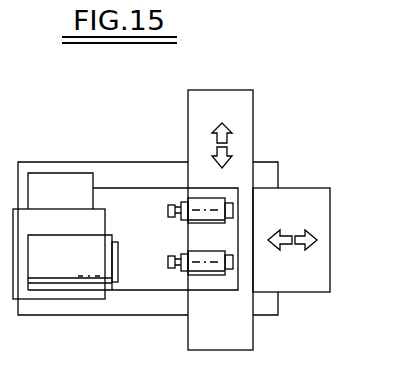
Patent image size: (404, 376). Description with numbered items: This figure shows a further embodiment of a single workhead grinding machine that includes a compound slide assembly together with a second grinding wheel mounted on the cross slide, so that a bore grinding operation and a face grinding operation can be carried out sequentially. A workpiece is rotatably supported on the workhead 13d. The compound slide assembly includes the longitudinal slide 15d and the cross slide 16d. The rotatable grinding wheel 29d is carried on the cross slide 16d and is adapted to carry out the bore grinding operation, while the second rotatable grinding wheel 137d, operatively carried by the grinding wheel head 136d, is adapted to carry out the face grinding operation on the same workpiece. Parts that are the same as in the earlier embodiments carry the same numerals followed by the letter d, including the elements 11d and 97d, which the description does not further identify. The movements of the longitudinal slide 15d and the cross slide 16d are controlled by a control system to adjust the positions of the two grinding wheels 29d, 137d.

The body / housing 11d is at (283, 168).
The workhead 13d is at (75, 276).
The longitudinal slide 15d is at (307, 294).
The cross slide 16d is at (257, 118).
The rotatable grinding wheel 29d is at (168, 208).
The upper clamp 97d is at (217, 210).
The grinding wheel head 136d is at (207, 269).
The rotatable grinding wheel 137d is at (168, 261).